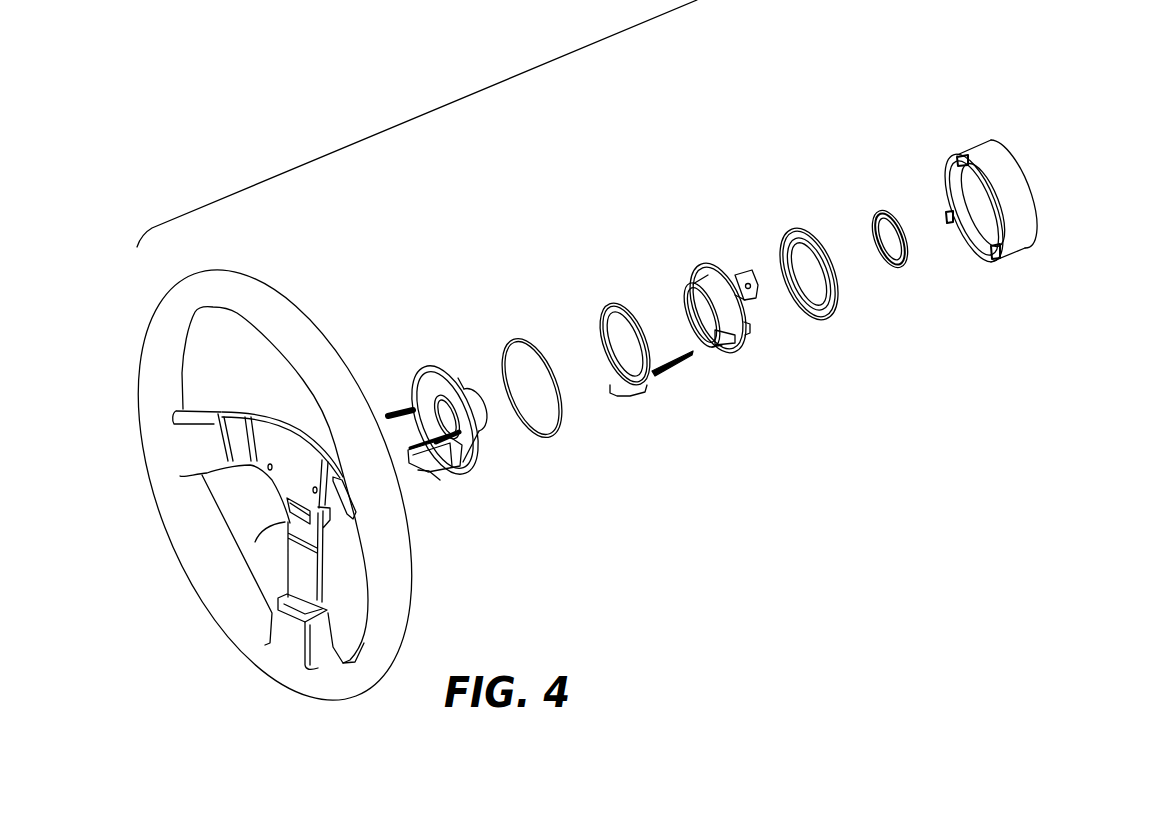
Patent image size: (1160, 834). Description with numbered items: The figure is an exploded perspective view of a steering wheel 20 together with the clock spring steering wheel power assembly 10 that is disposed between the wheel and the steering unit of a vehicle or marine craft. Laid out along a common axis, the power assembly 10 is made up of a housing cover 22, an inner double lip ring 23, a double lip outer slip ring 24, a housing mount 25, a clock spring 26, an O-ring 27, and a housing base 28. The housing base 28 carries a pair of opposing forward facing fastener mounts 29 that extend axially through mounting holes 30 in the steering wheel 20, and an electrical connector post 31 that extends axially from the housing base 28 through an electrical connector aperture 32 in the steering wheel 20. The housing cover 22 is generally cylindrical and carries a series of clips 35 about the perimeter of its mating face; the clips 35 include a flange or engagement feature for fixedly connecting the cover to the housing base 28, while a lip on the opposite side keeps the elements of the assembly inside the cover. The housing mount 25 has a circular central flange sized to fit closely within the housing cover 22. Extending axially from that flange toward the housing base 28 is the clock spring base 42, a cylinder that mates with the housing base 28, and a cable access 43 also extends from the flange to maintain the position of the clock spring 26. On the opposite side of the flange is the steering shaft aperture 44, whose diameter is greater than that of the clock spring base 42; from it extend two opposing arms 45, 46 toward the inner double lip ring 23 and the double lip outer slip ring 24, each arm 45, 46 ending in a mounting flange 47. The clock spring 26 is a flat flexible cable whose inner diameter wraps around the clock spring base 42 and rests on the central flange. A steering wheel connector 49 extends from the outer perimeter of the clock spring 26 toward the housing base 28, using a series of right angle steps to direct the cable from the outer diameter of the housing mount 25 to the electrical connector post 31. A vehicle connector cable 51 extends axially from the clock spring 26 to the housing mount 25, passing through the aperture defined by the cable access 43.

The clock spring steering wheel power assembly 10 is at (531, 65).
The steering wheel 20 is at (172, 284).
The housing cover 22 is at (1010, 262).
The inner double lip ring 23 is at (905, 264).
The double lip outer slip ring 24 is at (830, 310).
The housing mount 25 is at (740, 358).
The clock spring 26 is at (645, 394).
The O-ring 27 is at (550, 438).
The housing base 28 is at (457, 476).
The fastener mounts 29 is at (390, 413).
The mounting holes 30 is at (287, 520).
The electrical connector post 31 is at (430, 478).
The electrical connector aperture 32 is at (268, 471).
The clips 35 is at (946, 212).
The clock spring base 42 is at (710, 290).
The cable access 43 is at (722, 350).
The steering shaft aperture 44 is at (745, 305).
The arm 45 is at (742, 276).
The arm 46 is at (752, 328).
The mounting flange 47 is at (752, 282).
The steering wheel connector 49 is at (612, 393).
The vehicle connector cable 51 is at (670, 352).